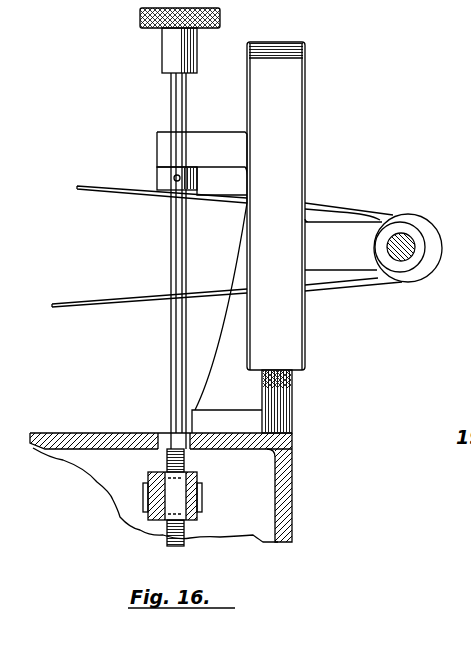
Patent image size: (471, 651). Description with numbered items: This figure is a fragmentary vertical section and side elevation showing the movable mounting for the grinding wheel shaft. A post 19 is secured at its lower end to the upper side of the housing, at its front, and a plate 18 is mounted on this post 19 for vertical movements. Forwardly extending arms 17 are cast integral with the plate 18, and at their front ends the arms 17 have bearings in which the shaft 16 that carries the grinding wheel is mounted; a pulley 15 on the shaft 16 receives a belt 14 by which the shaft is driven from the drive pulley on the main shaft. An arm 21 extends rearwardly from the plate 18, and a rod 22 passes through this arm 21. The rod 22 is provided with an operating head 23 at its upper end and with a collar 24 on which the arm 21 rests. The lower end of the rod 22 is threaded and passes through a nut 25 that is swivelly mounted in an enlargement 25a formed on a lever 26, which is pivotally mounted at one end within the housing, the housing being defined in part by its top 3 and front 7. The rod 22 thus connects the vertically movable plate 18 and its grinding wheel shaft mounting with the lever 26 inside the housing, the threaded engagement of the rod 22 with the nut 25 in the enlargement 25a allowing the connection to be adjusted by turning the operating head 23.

The top 3 is at (222, 441).
The front 7 is at (292, 507).
The belt 14 is at (318, 203).
The pulley 15 is at (410, 222).
The shaft 16 is at (418, 240).
The forwardly extending arms 17 is at (355, 255).
The plate 18 is at (287, 173).
The post 19 is at (252, 393).
The arm 21 is at (198, 142).
The rod 22 is at (176, 92).
The operating head 23 is at (221, 17).
The collar 24 is at (165, 185).
The nut 25 is at (197, 497).
The enlargement 25a is at (188, 510).
The lever 26 is at (157, 500).